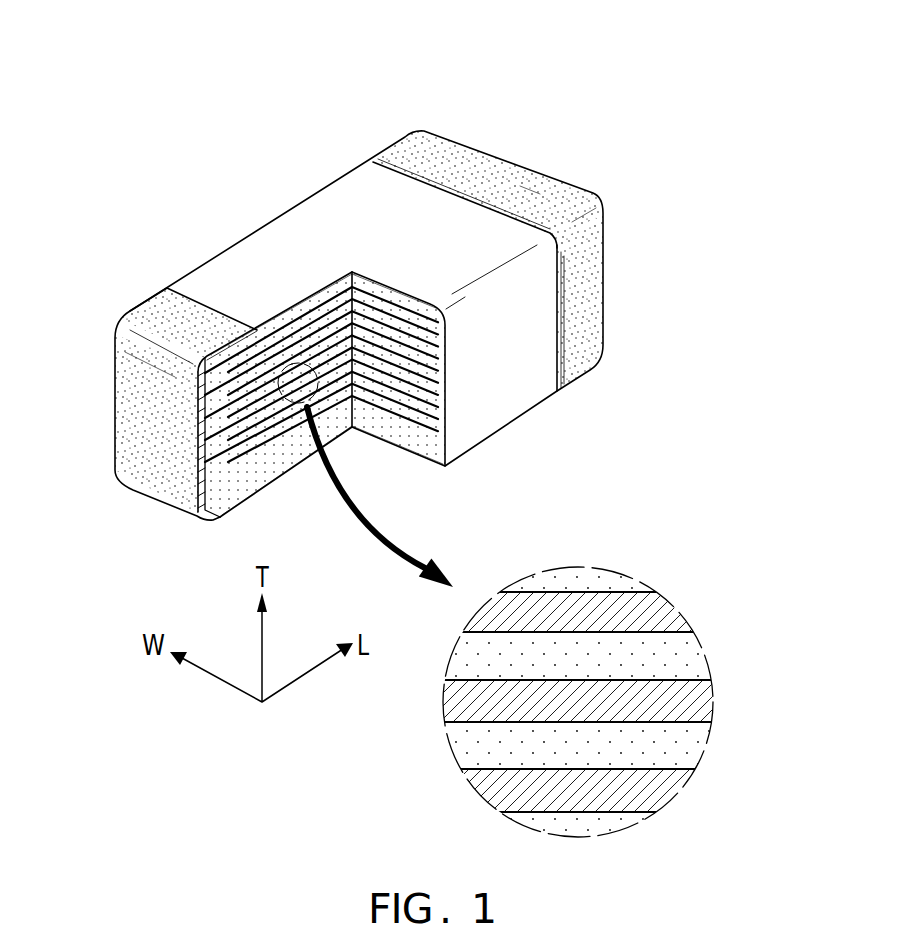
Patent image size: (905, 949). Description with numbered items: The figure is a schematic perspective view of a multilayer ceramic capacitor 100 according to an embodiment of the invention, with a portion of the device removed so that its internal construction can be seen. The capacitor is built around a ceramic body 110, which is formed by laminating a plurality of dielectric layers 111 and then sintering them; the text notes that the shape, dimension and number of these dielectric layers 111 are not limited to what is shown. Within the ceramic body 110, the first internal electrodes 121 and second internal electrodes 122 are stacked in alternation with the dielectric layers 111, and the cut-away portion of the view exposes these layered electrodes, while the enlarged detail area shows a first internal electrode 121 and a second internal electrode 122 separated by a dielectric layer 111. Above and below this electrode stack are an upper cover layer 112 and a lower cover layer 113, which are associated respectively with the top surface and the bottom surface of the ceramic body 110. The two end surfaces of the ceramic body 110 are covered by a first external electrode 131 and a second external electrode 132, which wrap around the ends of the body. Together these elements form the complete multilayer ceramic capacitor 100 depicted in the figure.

The multilayer ceramic capacitor 100 is at (391, 21).
The ceramic body 110 is at (214, 221).
The dielectric layer 111 is at (672, 654).
The upper cover layer 112 is at (313, 298).
The lower cover layer 113 is at (275, 460).
The first internal electrode 121 is at (433, 397).
The second internal electrode 122 is at (672, 702).
The first external electrode 131 is at (155, 313).
The second external electrode 132 is at (508, 178).